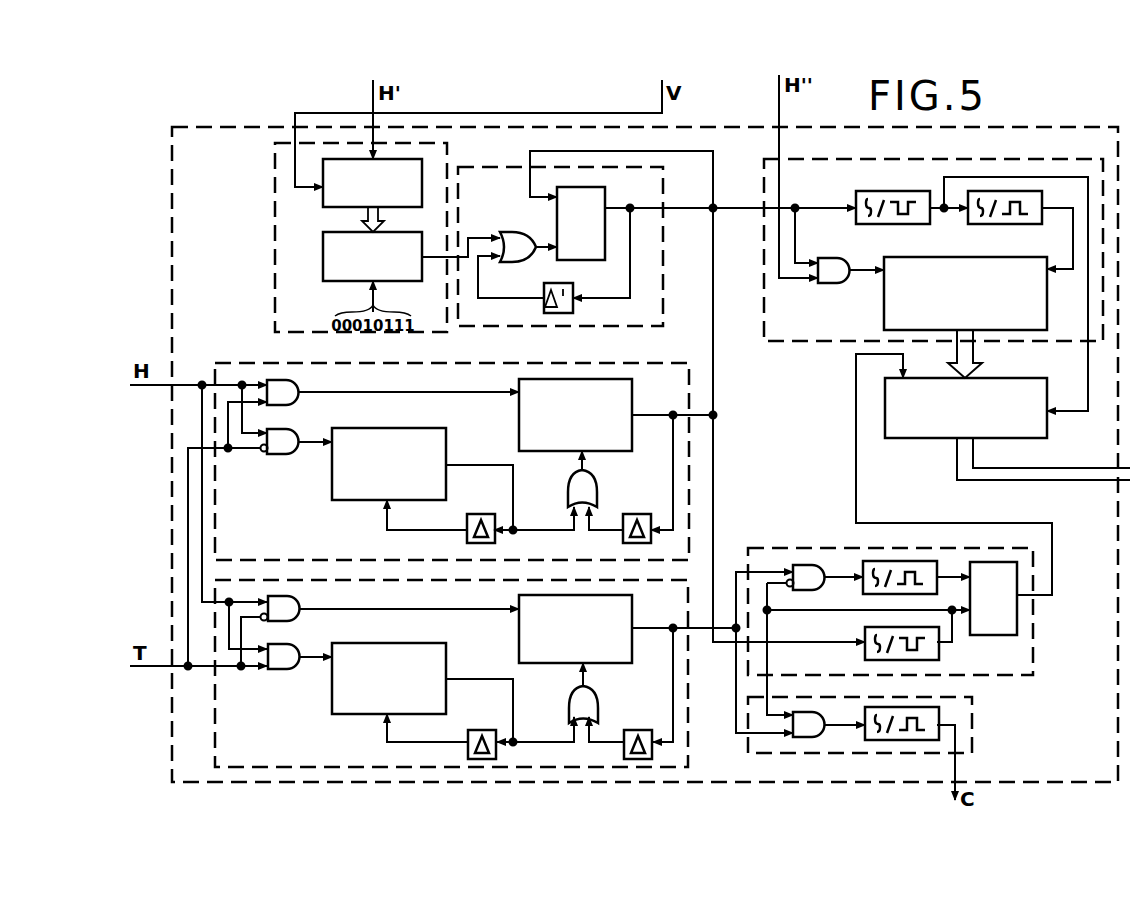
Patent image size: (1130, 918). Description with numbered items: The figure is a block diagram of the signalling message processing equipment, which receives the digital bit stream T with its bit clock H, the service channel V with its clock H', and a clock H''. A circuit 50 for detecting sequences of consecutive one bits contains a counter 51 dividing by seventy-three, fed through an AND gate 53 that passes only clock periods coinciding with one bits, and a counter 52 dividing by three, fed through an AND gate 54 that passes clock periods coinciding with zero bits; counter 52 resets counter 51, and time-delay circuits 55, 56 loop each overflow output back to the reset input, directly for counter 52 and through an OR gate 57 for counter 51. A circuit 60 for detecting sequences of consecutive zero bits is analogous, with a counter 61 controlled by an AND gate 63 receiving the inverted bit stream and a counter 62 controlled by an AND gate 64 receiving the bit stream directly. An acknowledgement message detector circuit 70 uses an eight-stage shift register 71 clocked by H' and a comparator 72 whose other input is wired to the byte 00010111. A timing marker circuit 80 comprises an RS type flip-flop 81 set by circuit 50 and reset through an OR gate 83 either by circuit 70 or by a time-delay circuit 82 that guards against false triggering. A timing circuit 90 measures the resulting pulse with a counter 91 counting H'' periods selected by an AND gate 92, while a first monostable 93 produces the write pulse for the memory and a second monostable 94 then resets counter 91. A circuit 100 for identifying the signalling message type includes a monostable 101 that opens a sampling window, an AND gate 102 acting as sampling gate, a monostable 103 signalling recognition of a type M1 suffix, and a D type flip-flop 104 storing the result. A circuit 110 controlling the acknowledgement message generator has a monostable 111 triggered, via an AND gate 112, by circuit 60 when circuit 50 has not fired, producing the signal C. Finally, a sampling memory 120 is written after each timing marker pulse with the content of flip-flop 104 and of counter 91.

The circuit for detecting sequences of consecutive one bits 50 is at (652, 362).
The counter 51 is at (530, 424).
The counter 52 is at (440, 440).
The AND gate 53 is at (296, 390).
The AND gate 54 is at (296, 450).
The time-delay circuit 55 is at (488, 496).
The time-delay circuit 56 is at (640, 514).
The OR gate 57 is at (571, 488).
The circuit for detecting sequences of consecutive zero bits 60 is at (688, 705).
The counter 61 is at (528, 634).
The counter 62 is at (446, 656).
The AND gate 63 is at (295, 614).
The AND gate 64 is at (294, 668).
The acknowledgement message detector circuit 70 is at (275, 258).
The shift register 71 is at (323, 205).
The comparator 72 is at (333, 267).
The timing marker circuit 80 is at (663, 280).
The RS type flip-flop 81 is at (600, 196).
The time-delay circuit 82 is at (544, 290).
The OR gate 83 is at (517, 240).
The timing circuit 90 is at (920, 159).
The counter 91 is at (1030, 310).
The AND gate 92 is at (832, 283).
The first monostable 93 is at (856, 224).
The second monostable 94 is at (968, 222).
The circuit for identifying the signalling message type 100 is at (812, 548).
The monostable 101 is at (865, 644).
The AND gate 102 is at (808, 590).
The monostable 103 is at (895, 570).
The D type flip-flop 104 is at (1010, 618).
The circuit controlling the acknowledgement message generator 110 is at (972, 727).
The monostable 111 is at (893, 740).
The AND gate 112 is at (804, 738).
The sampling memory 120 is at (903, 434).